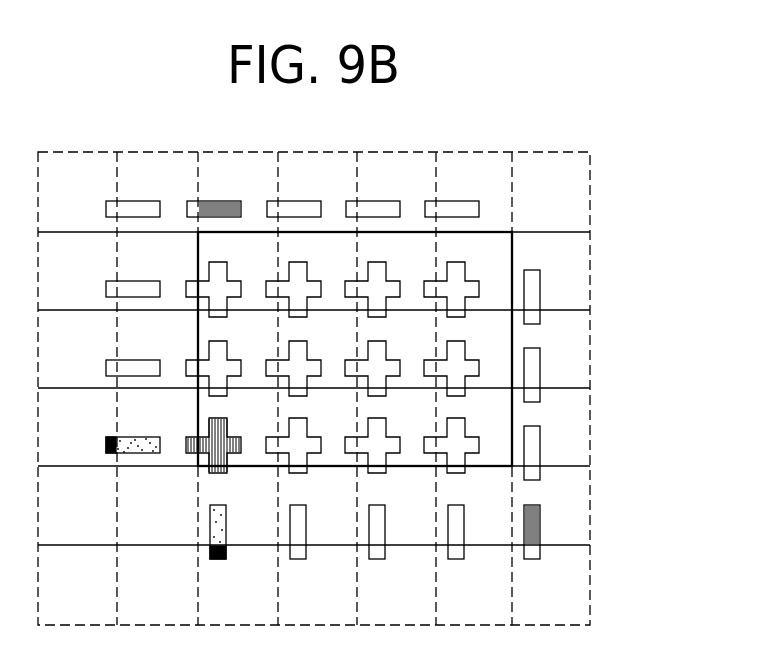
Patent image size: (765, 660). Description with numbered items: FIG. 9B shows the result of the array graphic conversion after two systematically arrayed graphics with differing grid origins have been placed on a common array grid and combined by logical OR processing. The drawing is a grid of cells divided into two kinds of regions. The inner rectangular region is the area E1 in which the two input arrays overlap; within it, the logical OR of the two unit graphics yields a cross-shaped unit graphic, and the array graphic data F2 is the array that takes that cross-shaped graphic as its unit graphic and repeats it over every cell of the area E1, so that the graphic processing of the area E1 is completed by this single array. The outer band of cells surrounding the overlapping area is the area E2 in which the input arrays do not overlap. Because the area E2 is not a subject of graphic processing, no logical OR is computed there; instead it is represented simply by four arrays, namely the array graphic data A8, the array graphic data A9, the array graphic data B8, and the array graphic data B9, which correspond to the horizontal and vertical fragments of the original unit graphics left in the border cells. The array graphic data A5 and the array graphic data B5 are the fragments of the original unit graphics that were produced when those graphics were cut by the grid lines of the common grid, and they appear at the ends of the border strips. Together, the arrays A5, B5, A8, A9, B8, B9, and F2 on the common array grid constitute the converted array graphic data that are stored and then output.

The array graphic data A5 is at (110, 455).
The array graphic data A8 is at (157, 454).
The array graphic data A9 is at (207, 202).
The array graphic data B5 is at (220, 559).
The array graphic data B8 is at (227, 521).
The array graphic data B9 is at (540, 528).
The area in which arrays overlap E1 is at (488, 245).
The area in which arrays do not overlap E2 is at (590, 360).
The array graphic data F2 is at (205, 437).